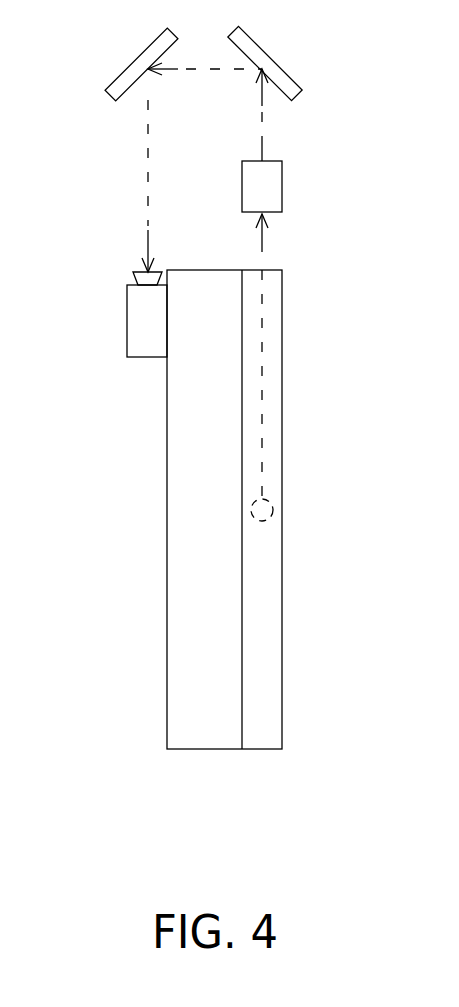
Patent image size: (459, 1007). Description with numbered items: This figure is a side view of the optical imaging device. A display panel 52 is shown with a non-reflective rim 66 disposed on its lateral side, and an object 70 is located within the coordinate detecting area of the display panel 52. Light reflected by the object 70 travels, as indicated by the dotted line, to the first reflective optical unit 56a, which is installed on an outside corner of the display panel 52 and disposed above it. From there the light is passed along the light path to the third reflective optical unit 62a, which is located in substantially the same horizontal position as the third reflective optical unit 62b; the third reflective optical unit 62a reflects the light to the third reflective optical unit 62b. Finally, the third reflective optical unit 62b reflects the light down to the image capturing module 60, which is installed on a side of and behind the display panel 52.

The display panel 52 is at (188, 622).
The non-reflective rim 66 is at (265, 622).
The image capturing module 60 is at (137, 325).
The third reflective optical unit 62b is at (135, 68).
The third reflective optical unit 62a is at (275, 68).
The first reflective optical unit 56a is at (275, 190).
The object 70 is at (275, 505).